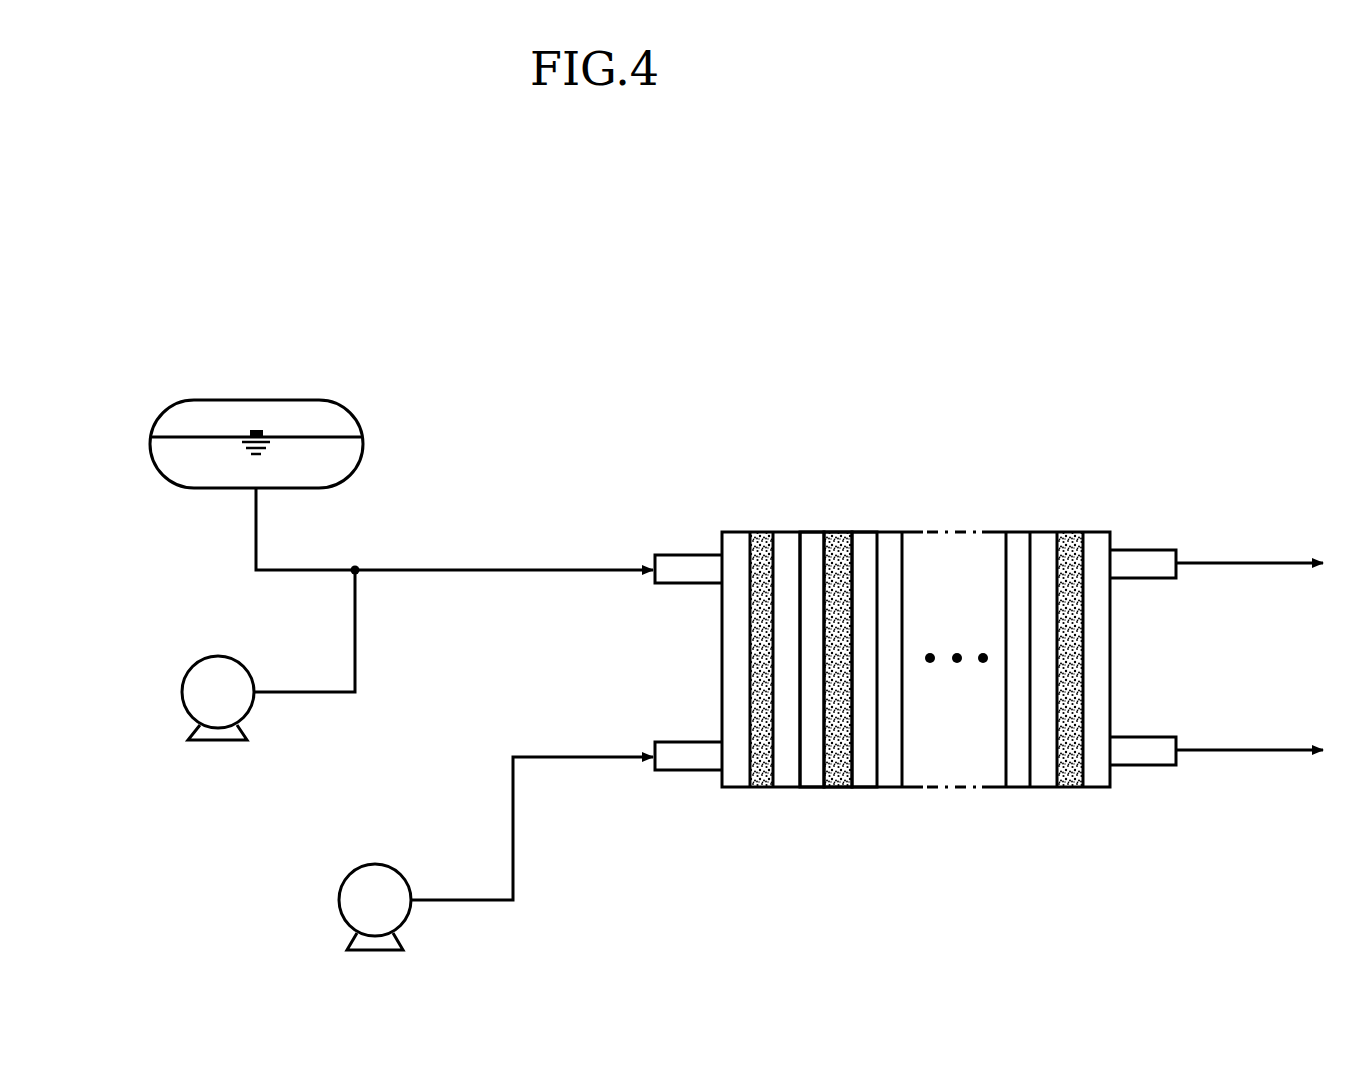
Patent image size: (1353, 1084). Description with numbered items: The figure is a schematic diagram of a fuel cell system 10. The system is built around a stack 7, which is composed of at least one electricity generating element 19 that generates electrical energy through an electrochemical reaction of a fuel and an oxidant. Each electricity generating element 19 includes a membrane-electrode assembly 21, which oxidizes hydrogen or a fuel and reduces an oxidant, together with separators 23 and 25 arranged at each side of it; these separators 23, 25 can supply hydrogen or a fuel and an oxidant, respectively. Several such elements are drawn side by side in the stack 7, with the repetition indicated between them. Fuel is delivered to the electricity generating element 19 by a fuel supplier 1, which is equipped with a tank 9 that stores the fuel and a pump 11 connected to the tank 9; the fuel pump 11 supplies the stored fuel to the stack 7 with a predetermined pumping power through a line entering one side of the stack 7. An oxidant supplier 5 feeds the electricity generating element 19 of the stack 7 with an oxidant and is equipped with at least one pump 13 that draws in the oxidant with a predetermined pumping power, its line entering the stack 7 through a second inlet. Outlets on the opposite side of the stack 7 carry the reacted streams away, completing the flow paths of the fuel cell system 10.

The fuel supplier 1 is at (128, 425).
The oxidant supplier 5 is at (318, 888).
The stack 7 is at (1004, 495).
The tank 9 is at (240, 400).
The fuel cell system 10 is at (638, 313).
The pump 11 is at (190, 668).
The pump 13 is at (362, 865).
The electricity generating element 19 is at (846, 737).
The membrane-electrode assembly 21 is at (843, 788).
The separator 23 is at (818, 788).
The separator 25 is at (883, 711).